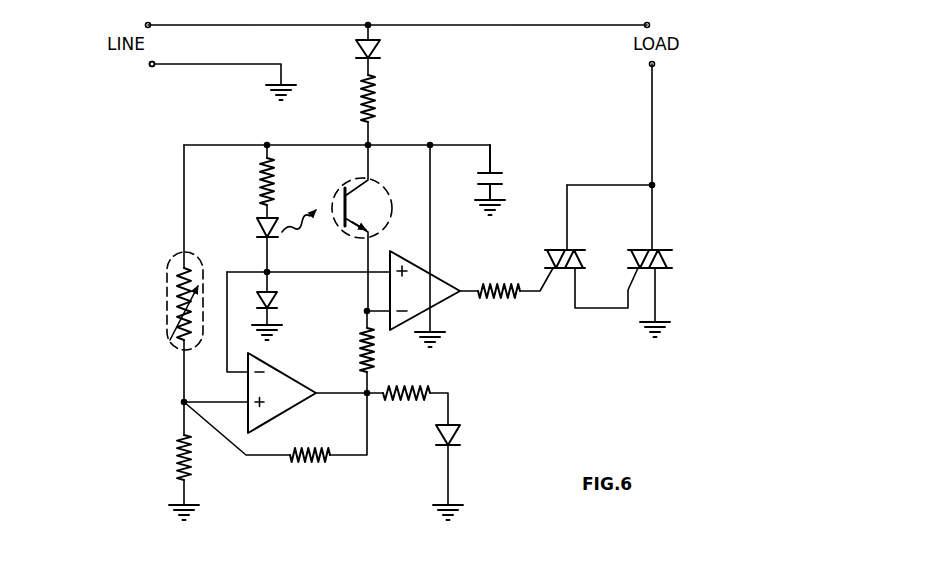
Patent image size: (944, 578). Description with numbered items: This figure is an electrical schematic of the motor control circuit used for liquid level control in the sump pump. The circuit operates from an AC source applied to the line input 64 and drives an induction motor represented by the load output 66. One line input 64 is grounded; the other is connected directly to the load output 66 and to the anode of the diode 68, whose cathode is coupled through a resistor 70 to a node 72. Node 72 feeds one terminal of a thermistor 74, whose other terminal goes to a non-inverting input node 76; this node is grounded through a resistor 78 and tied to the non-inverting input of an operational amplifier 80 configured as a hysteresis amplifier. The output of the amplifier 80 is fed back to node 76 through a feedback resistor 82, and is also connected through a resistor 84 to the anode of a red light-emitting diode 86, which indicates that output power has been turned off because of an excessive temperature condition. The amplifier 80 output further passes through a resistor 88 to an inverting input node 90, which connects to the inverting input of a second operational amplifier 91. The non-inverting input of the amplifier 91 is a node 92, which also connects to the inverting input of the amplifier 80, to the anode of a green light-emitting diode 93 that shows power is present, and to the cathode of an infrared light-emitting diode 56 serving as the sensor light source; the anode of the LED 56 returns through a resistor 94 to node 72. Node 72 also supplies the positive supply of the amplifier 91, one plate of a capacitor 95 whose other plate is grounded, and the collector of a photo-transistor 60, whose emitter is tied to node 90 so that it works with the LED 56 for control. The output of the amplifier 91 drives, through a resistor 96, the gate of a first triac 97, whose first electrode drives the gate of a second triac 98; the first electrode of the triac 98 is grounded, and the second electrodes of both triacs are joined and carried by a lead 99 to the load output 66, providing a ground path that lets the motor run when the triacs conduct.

The infrared light-emitting diode 56 is at (256, 226).
The photo-transistor 60 is at (380, 196).
The line input 64 is at (146, 56).
The load output 66 is at (659, 58).
The diode 68 is at (382, 46).
The resistor 70 is at (378, 95).
The node 72 is at (370, 143).
The thermistor 74 is at (173, 265).
The non-inverting input node 76 is at (182, 400).
The resistor 78 is at (176, 450).
The operational amplifier 80 is at (283, 388).
The feedback resistor 82 is at (305, 460).
The resistor 84 is at (400, 402).
The light-emitting diode 86 is at (462, 436).
The resistor 88 is at (373, 352).
The inverting input node 90 is at (364, 312).
The second operational amplifier 91 is at (438, 290).
The non-inverting input node 92 is at (270, 270).
The light-emitting diode 93 is at (278, 298).
The resistor 94 is at (262, 180).
The capacitor 95 is at (496, 170).
The resistor 96 is at (495, 300).
The first triac 97 is at (558, 250).
The second triac 98 is at (660, 250).
The lead 99 is at (654, 130).